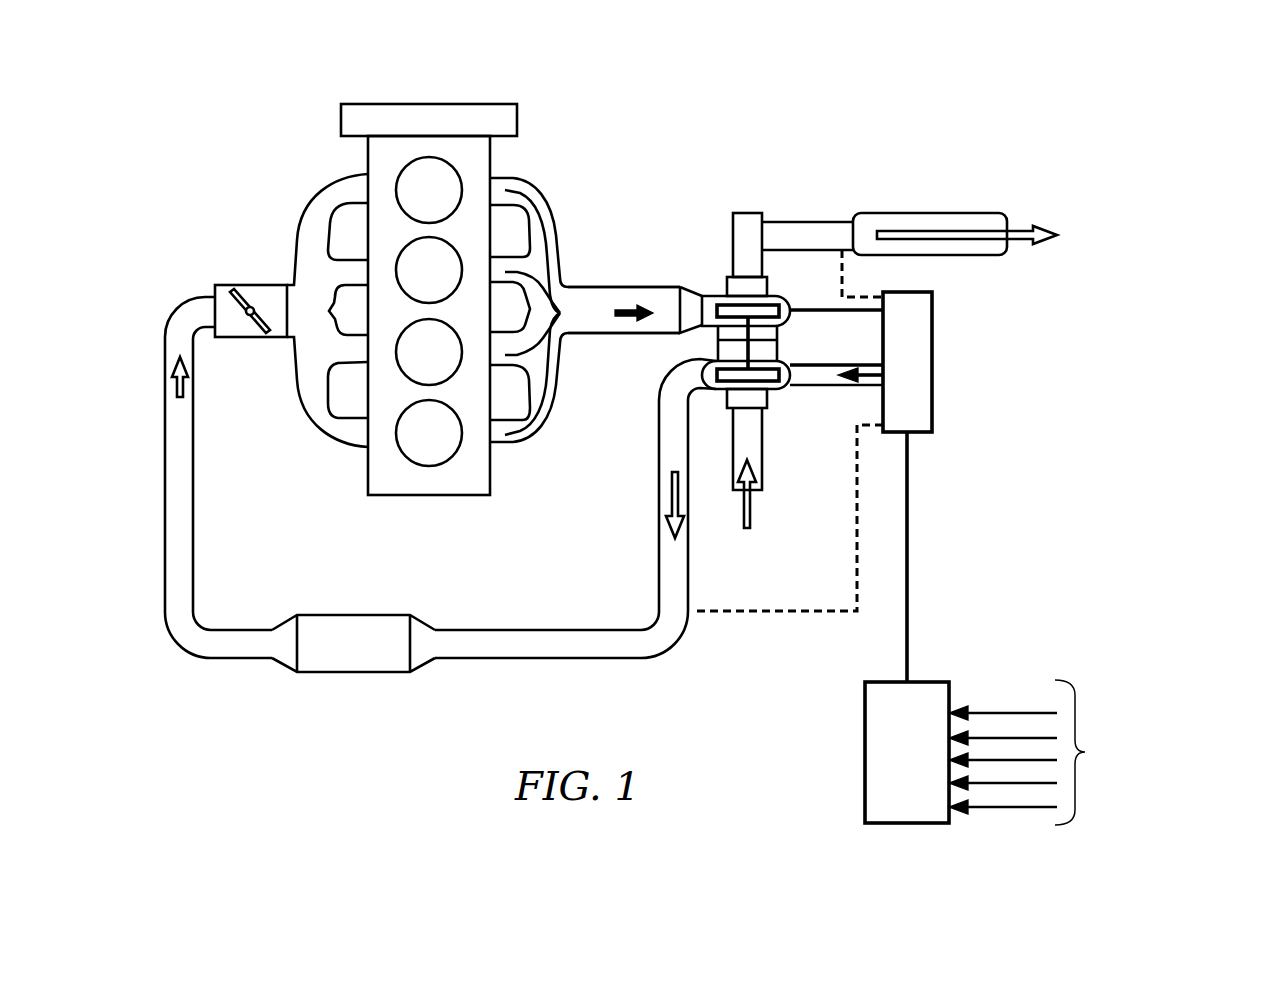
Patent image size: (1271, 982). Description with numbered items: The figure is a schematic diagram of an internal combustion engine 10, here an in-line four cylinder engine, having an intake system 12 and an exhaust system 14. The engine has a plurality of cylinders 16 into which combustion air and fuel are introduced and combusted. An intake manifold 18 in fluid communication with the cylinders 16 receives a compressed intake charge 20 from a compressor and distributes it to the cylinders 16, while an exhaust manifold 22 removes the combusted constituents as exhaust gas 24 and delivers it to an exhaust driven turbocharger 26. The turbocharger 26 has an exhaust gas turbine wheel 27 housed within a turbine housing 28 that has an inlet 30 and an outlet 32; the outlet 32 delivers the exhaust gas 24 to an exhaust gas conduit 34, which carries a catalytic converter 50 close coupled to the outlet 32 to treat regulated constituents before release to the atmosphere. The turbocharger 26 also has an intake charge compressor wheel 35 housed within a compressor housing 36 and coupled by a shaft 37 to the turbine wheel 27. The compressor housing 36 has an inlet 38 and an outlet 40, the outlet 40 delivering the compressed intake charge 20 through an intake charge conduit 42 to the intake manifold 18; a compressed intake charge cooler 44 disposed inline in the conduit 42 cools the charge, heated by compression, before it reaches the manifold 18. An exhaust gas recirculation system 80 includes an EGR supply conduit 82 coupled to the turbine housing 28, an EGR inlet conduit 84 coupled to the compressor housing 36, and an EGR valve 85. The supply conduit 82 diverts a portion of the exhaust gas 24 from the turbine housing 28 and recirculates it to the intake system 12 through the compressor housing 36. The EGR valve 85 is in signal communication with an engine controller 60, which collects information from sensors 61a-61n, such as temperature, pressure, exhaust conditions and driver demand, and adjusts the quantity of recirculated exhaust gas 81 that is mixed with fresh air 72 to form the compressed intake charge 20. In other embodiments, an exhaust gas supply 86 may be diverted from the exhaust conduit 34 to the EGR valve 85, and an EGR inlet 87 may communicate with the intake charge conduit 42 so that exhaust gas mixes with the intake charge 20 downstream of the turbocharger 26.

The internal combustion engine 10 is at (459, 267).
The intake system 12 is at (158, 314).
The exhaust system 14 is at (735, 328).
The cylinders 16 is at (445, 190).
The intake manifold 18 is at (340, 428).
The compressed intake charge 20 is at (172, 360).
The exhaust manifold 22 is at (540, 197).
The exhaust gas 24 is at (607, 310).
The exhaust driven turbocharger 26 is at (694, 357).
The exhaust gas turbine wheel 27 is at (768, 331).
The turbine housing 28 is at (792, 275).
The inlet 30 is at (720, 293).
The outlet 32 is at (733, 287).
The exhaust gas conduit 34 is at (874, 213).
The intake charge compressor wheel 35 is at (762, 389).
The compressor housing 36 is at (770, 362).
The shaft 37 is at (716, 339).
The inlet 38 is at (753, 402).
The outlet 40 is at (690, 400).
The intake charge conduit 42 is at (158, 612).
The compressed intake charge cooler 44 is at (352, 615).
The catalytic converter 50 is at (745, 222).
The engine controller 60 is at (907, 752).
The sensors 61a-61n is at (1085, 752).
The fresh air 72 is at (748, 507).
The exhaust gas recirculation system 80 is at (944, 366).
The recirculated exhaust gas 81 is at (892, 376).
The EGR supply conduit 82 is at (850, 307).
The EGR inlet conduit 84 is at (866, 363).
The EGR valve 85 is at (932, 418).
The exhaust gas supply 86 is at (848, 291).
The EGR inlet 87 is at (757, 613).